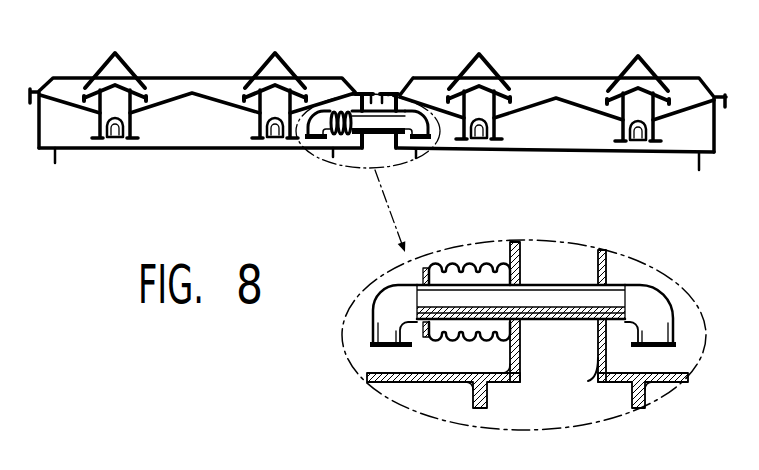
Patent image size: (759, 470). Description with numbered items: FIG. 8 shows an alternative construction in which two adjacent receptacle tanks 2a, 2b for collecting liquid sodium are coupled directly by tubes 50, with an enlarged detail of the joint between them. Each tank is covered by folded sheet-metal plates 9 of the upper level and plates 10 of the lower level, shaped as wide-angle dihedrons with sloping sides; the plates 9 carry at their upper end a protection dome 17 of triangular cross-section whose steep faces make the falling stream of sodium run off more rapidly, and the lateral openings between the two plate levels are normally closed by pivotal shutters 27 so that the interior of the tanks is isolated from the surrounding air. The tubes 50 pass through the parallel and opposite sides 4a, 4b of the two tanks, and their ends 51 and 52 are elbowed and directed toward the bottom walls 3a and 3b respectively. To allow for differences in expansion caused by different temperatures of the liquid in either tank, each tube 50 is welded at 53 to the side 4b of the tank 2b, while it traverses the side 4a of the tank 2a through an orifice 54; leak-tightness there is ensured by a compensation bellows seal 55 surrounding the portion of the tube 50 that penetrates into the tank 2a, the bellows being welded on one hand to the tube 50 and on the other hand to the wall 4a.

The tank 2a is at (84, 154).
The tank 2b is at (552, 71).
The bottom wall 3a is at (230, 150).
The bottom wall 3b is at (590, 154).
The side 4a is at (353, 92).
The side 4b is at (396, 101).
The plate 9 is at (100, 79).
The plate 10 is at (180, 95).
The protection dome 17 is at (120, 78).
The pivotal shutter 27 is at (268, 72).
The tube 50 is at (116, 151).
The tube end 51 is at (318, 148).
The tube end 52 is at (416, 150).
The weld 53 is at (596, 364).
The orifice 54 is at (521, 283).
The compensation bellows seal 55 is at (493, 341).